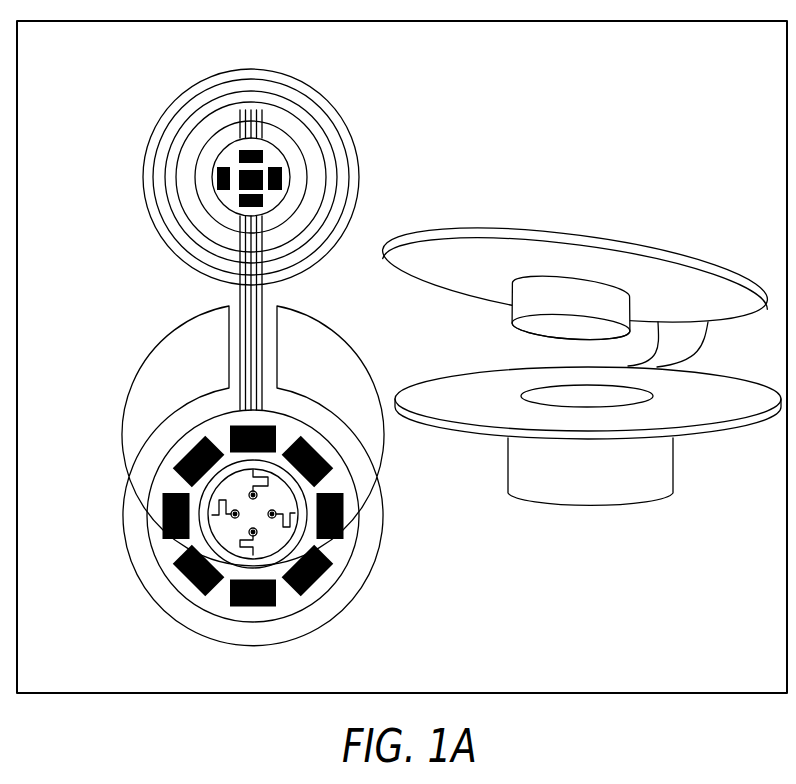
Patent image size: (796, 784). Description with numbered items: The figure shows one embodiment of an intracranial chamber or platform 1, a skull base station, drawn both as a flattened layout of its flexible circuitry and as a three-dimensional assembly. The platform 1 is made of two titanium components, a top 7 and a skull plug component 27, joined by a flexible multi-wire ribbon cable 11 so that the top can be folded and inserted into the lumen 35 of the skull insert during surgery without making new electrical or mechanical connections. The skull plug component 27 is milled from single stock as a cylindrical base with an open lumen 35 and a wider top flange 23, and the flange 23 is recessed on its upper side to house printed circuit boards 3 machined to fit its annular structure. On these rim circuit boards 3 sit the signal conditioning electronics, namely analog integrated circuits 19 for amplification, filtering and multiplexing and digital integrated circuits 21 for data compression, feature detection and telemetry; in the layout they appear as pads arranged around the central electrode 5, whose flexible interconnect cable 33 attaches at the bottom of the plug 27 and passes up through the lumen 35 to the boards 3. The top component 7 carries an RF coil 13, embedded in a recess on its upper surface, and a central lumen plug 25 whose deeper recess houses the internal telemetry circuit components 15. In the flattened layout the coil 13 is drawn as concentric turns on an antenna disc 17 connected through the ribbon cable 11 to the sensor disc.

The intracranial chamber or platform 1 is at (748, 265).
The printed circuit boards 3 is at (158, 462).
The electrode 5 is at (263, 529).
The top component 7 is at (586, 241).
The flexible multi-wire ribbon cable 11 is at (239, 348).
The RF coil 13 is at (148, 220).
The internal telemetry circuit components 15 is at (229, 158).
The antenna disc of flexible circuit 17 is at (356, 97).
The analog integrated circuits 19 is at (160, 516).
The digital integrated circuits 21 is at (186, 578).
The top flange 23 is at (452, 440).
The lumen plug 25 is at (545, 295).
The skull plug component 27 is at (597, 495).
The flexible interconnect cable 33 is at (248, 557).
The open lumen 35 is at (585, 398).